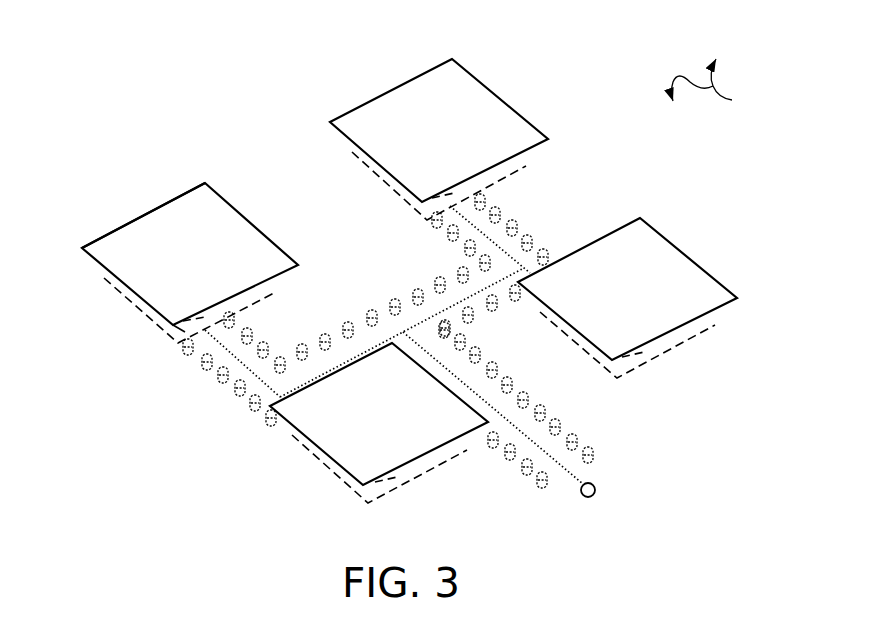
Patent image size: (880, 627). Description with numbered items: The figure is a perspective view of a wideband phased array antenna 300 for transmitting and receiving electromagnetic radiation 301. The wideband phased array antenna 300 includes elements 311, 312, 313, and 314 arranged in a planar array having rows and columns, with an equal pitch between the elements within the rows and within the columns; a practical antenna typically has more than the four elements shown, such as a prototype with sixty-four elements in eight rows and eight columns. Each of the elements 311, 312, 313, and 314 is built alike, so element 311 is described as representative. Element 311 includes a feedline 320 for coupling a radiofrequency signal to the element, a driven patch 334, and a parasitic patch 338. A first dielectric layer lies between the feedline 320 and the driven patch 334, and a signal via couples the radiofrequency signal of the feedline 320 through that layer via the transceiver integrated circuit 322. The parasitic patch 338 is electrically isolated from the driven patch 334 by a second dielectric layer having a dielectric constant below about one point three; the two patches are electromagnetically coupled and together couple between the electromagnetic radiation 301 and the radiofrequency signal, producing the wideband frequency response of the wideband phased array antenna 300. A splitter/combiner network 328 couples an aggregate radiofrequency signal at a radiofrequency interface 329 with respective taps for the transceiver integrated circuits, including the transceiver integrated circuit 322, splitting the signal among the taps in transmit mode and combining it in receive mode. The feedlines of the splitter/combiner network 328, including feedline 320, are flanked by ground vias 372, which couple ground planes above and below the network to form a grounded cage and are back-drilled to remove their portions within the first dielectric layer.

The wideband phased array antenna 300 is at (115, 100).
The electromagnetic radiation 301 is at (717, 86).
The element 311 is at (248, 205).
The element 312 is at (360, 182).
The element 313 is at (464, 463).
The element 314 is at (568, 353).
The feedline 320 is at (229, 352).
The transceiver integrated circuit 322 is at (182, 327).
The splitter/combiner network 328 is at (383, 304).
The radiofrequency interface 329 is at (596, 490).
The driven patch 334 is at (125, 297).
The parasitic patch 338 is at (125, 223).
The ground vias 372 is at (325, 333).